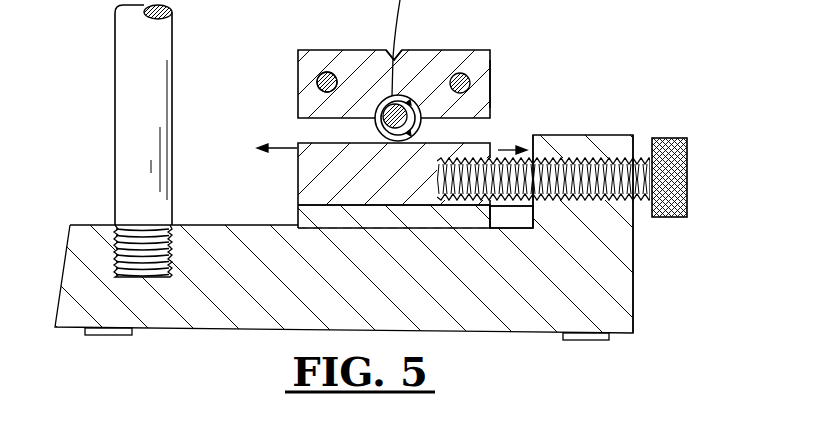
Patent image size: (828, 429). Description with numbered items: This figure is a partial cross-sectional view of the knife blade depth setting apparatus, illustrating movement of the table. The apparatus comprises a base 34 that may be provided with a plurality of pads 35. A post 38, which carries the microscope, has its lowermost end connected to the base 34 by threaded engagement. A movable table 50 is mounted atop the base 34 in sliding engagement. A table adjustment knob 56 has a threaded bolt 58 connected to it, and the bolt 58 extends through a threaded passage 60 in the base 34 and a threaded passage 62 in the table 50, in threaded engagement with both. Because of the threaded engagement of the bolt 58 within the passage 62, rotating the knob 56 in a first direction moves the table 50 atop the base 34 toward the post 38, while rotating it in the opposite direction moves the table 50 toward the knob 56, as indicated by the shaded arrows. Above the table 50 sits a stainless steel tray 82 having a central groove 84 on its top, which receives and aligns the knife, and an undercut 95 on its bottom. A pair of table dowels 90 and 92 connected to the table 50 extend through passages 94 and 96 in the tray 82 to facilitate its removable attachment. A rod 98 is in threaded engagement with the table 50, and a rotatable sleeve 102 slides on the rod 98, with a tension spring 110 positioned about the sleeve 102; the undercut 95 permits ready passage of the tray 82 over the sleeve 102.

The base 34 is at (330, 274).
The pads 35 is at (110, 337).
The post 38 is at (173, 48).
The movable table 50 is at (318, 173).
The table adjustment knob 56 is at (688, 182).
The threaded bolt 58 is at (639, 157).
The threaded passage 60 is at (568, 150).
The threaded passage 62 is at (468, 200).
The tray 82 is at (358, 56).
The central groove 84 is at (397, 96).
The table dowel 90 is at (317, 82).
The table dowel 92 is at (488, 96).
The passage 94 is at (329, 72).
The undercut 95 is at (409, 100).
The passage 96 is at (471, 82).
The rod 98 is at (378, 125).
The rotatable sleeve 102 is at (420, 128).
The tension spring 110 is at (423, 100).